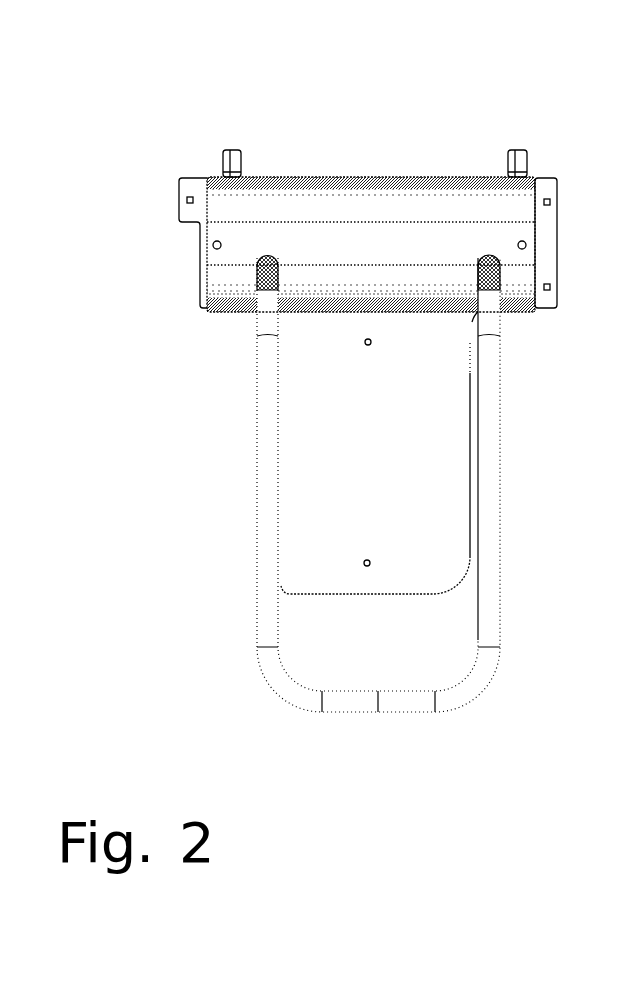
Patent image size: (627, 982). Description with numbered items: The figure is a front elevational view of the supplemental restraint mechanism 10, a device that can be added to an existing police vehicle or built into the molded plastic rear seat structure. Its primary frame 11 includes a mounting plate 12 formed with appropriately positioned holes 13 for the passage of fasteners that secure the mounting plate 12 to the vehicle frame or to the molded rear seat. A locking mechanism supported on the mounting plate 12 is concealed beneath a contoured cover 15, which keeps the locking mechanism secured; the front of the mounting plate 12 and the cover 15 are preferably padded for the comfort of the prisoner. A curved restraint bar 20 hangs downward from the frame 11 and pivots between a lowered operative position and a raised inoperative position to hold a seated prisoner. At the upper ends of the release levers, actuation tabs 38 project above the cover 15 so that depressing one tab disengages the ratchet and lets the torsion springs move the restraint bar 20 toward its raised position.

The supplemental restraint mechanism 10 is at (203, 120).
The primary frame 11 is at (537, 173).
The mounting plate 12 is at (403, 402).
The holes 13 is at (367, 567).
The cover 15 is at (337, 197).
The restraint bar 20 is at (490, 533).
The actuation tab 38 is at (237, 150).